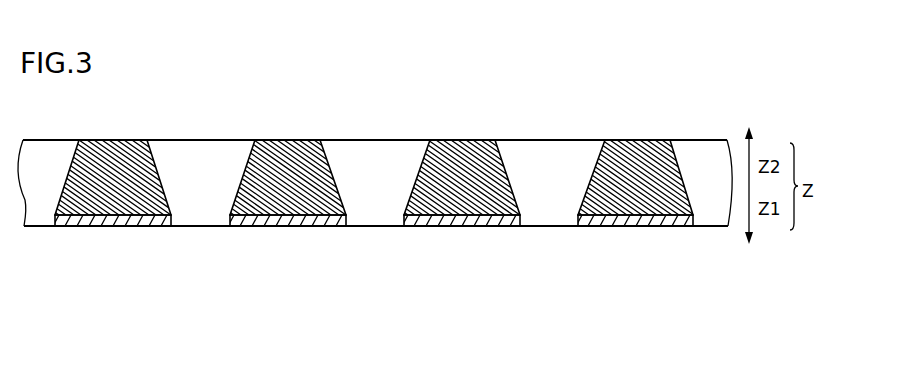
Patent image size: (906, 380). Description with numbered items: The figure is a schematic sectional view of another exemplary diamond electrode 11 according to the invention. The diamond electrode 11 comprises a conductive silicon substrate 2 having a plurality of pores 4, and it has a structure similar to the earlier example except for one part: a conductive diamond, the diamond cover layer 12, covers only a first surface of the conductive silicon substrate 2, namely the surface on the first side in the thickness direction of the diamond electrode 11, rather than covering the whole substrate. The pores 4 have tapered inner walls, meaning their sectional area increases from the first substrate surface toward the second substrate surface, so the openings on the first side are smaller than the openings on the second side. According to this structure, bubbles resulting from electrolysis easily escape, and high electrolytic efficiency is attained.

The diamond electrode 11 is at (704, 96).
The pores 4 is at (552, 158).
The conductive silicon substrate 2 is at (269, 190).
The diamond cover layer 12 is at (303, 218).